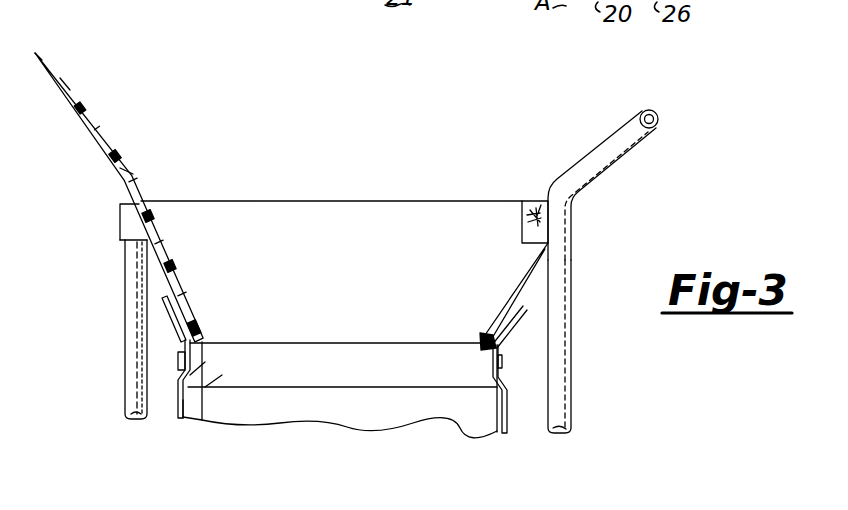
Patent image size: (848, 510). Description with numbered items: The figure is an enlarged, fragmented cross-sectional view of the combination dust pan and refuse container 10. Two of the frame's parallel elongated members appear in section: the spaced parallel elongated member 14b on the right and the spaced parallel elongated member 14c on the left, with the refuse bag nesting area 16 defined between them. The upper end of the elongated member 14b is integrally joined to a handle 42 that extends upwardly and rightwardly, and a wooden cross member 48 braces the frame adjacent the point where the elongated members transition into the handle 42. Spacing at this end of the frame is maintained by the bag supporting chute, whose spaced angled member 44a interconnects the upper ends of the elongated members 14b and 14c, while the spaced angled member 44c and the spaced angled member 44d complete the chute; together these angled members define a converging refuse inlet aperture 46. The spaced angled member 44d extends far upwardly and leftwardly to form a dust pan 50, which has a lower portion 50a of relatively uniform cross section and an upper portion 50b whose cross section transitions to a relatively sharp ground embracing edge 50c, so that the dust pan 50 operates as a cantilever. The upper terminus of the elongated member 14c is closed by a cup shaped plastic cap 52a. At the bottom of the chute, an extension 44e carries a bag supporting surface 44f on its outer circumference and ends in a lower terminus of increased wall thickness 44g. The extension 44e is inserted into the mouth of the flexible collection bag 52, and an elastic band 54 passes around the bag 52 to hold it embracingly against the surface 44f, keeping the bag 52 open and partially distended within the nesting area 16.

The combination dust pan and refuse container 10 is at (462, 145).
The spaced parallel elongated member 14b is at (563, 243).
The spaced parallel elongated member 14c is at (127, 320).
The refuse bag nesting area 16 is at (537, 358).
The handle 42 is at (657, 110).
The spaced angled member 44a is at (372, 263).
The spaced angled member 44c is at (513, 283).
The spaced angled member 44d is at (163, 252).
The extension 44e is at (317, 373).
The bag supporting surface 44f is at (190, 356).
The lower terminus of increased wall thickness 44g is at (197, 390).
The converging refuse inlet aperture 46 is at (258, 330).
The wooden cross member 48 is at (522, 219).
The dust pan 50 is at (107, 133).
The lower portion 50a is at (133, 175).
The upper portion 50b is at (67, 82).
The ground embracing edge 50c is at (35, 54).
The flexible collection bag 52 is at (240, 412).
The cup shaped plastic cap 52a is at (127, 228).
The elastic band 54 is at (180, 353).